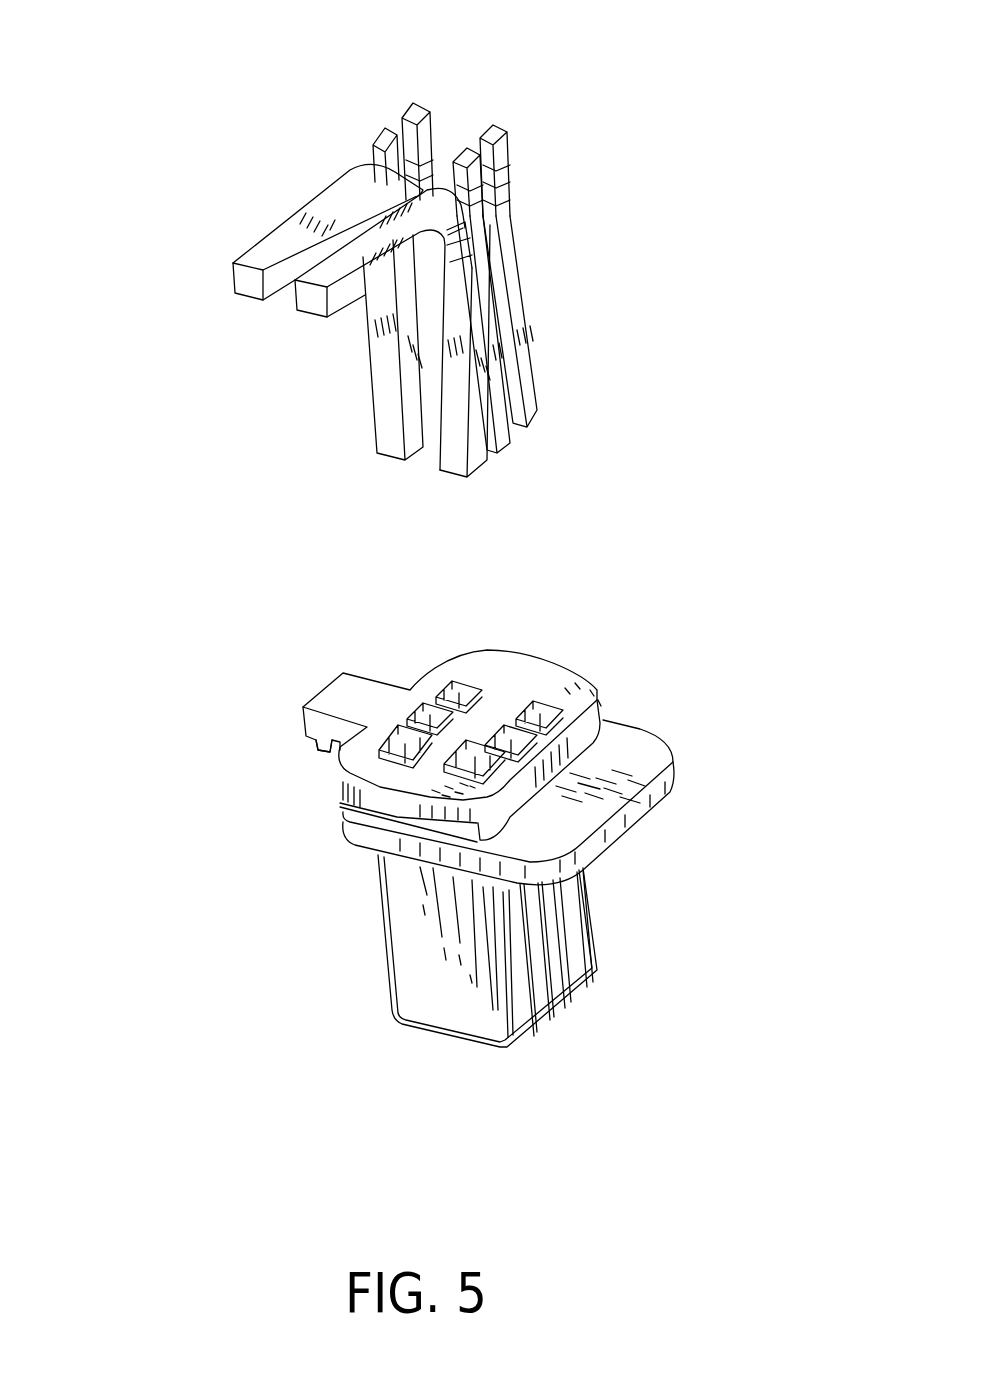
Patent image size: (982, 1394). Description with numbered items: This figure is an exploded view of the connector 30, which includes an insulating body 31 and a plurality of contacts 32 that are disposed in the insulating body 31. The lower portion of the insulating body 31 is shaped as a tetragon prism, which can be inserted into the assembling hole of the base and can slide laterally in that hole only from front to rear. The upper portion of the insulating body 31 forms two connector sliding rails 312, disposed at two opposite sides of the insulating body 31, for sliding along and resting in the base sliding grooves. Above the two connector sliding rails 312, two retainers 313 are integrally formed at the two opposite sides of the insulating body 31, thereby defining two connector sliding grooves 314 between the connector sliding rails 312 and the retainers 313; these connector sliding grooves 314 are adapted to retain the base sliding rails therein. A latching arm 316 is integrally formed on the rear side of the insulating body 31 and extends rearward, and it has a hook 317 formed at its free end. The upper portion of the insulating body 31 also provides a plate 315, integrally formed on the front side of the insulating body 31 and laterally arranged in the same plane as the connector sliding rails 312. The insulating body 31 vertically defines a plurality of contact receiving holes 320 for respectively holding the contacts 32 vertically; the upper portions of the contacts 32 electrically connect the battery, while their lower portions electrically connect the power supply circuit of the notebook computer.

The connector 30 is at (138, 28).
The insulating body 31 is at (487, 705).
The contacts 32 is at (225, 200).
The connector sliding rails 312 is at (622, 722).
The retainers 313 is at (383, 800).
The connector sliding grooves 314 is at (387, 823).
The plate 315 is at (590, 798).
The latching arm 316 is at (360, 697).
The hook 317 is at (305, 745).
The contact receiving holes 320 is at (541, 702).